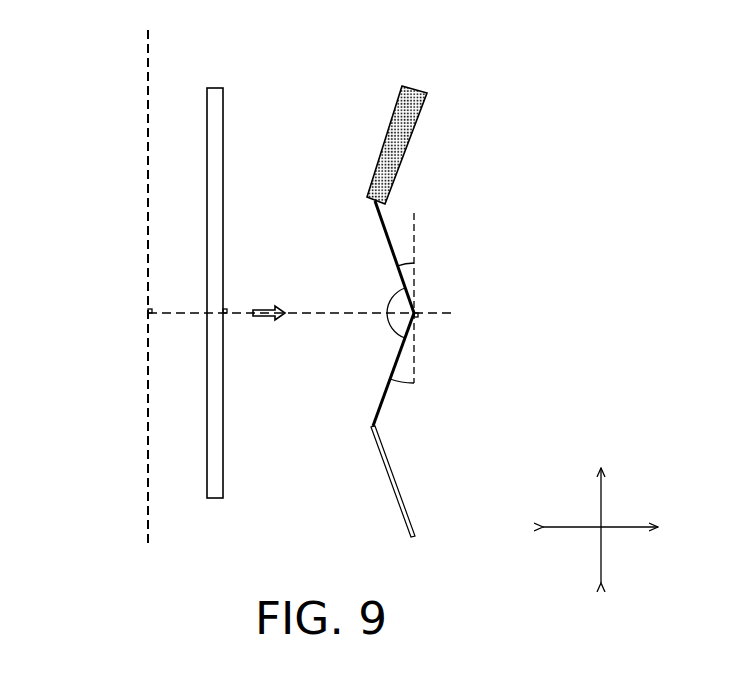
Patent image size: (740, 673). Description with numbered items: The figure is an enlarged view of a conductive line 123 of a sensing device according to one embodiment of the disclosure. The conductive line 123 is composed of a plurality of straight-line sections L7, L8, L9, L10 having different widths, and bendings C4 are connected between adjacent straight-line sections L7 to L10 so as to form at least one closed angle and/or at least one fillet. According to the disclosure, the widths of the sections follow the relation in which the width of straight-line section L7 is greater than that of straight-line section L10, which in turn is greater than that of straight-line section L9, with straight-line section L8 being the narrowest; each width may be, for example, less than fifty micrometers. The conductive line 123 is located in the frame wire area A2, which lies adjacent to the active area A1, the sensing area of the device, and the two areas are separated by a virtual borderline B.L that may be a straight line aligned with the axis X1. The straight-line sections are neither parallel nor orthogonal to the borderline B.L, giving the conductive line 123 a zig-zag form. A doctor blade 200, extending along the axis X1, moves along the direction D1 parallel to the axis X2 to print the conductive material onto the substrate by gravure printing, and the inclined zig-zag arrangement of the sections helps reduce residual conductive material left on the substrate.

The doctor blade 200 is at (213, 498).
The conductive line 123 is at (534, 172).
The straight-line section L7 is at (393, 134).
The straight-line section L8 is at (392, 250).
The straight-line section L9 is at (380, 406).
The straight-line section L10 is at (398, 485).
The bending C4 is at (374, 203).
The direction D1 is at (262, 306).
The active area A1 is at (53, 54).
The frame wire area A2 is at (351, 54).
The borderline B.L is at (149, 272).
The axis X1 is at (601, 510).
The axis X2 is at (616, 528).